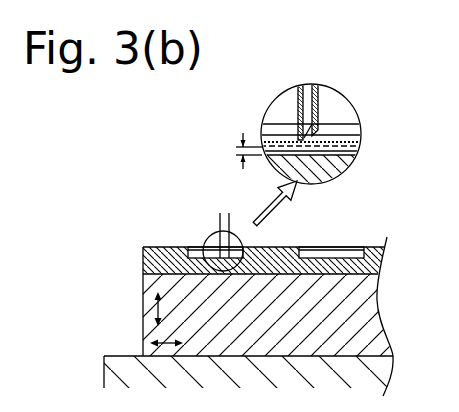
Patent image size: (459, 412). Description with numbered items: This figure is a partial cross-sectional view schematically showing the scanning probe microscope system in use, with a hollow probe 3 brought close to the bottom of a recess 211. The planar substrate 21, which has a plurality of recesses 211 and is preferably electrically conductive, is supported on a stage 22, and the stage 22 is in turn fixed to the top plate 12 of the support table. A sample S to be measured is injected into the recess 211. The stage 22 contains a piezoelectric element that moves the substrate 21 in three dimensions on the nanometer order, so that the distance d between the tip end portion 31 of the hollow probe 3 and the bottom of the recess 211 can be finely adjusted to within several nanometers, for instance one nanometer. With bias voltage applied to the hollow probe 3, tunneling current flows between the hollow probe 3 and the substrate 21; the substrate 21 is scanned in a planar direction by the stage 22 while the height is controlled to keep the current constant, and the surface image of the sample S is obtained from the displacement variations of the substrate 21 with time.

The hollow probe 3 is at (297, 107).
The sample S is at (337, 142).
The distance d is at (242, 151).
The tip end portion 31 is at (313, 148).
The recess 211 is at (195, 250).
The substrate 21 is at (143, 265).
The stage 22 is at (142, 320).
The top plate 12 is at (112, 369).